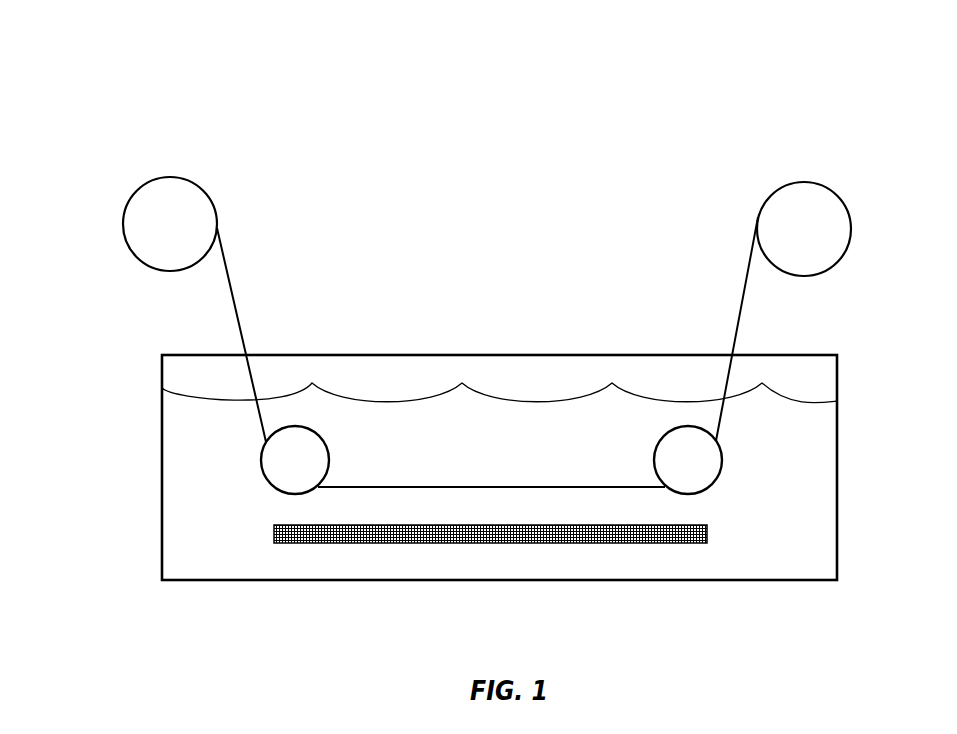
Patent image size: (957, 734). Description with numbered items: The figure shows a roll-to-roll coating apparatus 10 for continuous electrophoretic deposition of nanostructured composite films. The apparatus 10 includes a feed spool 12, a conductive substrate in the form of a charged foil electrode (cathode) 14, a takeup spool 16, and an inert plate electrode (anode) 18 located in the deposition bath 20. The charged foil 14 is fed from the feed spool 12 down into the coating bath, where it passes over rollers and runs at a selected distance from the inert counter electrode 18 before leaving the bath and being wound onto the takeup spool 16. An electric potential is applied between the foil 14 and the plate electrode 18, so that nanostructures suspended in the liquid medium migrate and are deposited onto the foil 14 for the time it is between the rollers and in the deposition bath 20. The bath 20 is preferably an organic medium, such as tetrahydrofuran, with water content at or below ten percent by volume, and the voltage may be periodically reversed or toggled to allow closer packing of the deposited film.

The coating apparatus 10 is at (327, 61).
The feed spool 12 is at (143, 155).
The charged foil electrode (cathode) 14 is at (733, 286).
The takeup spool 16 is at (785, 155).
The inert plate electrode (anode) 18 is at (268, 501).
The deposition bath 20 is at (803, 523).